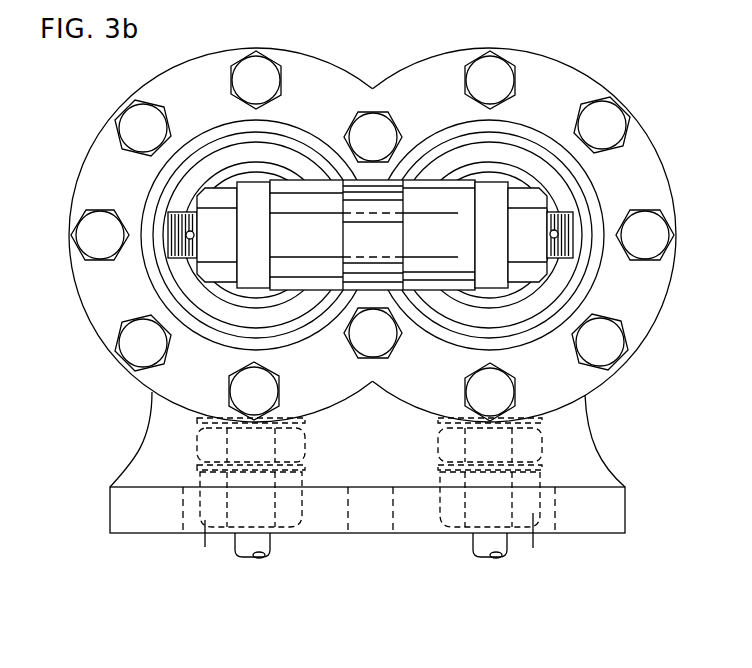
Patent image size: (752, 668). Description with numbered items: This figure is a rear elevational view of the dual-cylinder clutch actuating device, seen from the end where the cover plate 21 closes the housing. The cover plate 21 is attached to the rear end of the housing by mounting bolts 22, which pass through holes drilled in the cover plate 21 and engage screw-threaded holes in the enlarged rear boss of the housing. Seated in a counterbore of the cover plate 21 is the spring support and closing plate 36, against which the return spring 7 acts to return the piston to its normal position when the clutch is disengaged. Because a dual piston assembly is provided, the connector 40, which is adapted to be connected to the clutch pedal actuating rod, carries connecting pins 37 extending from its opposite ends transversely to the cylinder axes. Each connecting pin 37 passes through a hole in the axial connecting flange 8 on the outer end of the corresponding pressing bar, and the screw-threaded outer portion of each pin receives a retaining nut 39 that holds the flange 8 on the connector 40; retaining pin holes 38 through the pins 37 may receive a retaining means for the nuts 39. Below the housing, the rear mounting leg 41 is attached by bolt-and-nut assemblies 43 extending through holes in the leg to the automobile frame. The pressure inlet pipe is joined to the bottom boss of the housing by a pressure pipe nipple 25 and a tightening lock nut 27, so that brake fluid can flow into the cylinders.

The return spring 7 is at (510, 162).
The axial connecting flange 8 is at (497, 267).
The cover plate 21 is at (580, 84).
The mounting bolts 22 is at (612, 123).
The pressure pipe nipple 25 is at (200, 443).
The lock nut 27 is at (212, 477).
The spring support and closing plate 36 is at (600, 262).
The connecting pin 37 is at (532, 223).
The retaining pin holes 38 is at (186, 238).
The retaining nuts 39 is at (545, 196).
The connector 40 is at (428, 207).
The rear mounting leg 41 is at (600, 498).
The bolt-and-nut assemblies 43 is at (533, 540).